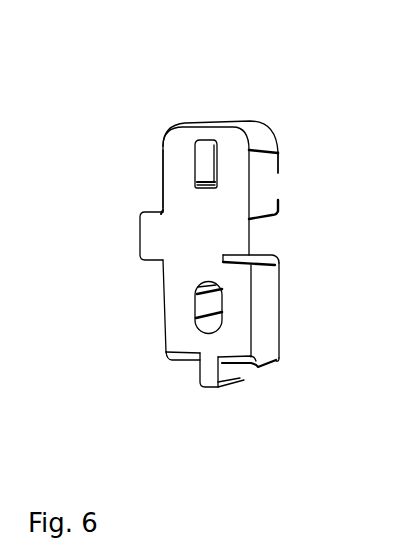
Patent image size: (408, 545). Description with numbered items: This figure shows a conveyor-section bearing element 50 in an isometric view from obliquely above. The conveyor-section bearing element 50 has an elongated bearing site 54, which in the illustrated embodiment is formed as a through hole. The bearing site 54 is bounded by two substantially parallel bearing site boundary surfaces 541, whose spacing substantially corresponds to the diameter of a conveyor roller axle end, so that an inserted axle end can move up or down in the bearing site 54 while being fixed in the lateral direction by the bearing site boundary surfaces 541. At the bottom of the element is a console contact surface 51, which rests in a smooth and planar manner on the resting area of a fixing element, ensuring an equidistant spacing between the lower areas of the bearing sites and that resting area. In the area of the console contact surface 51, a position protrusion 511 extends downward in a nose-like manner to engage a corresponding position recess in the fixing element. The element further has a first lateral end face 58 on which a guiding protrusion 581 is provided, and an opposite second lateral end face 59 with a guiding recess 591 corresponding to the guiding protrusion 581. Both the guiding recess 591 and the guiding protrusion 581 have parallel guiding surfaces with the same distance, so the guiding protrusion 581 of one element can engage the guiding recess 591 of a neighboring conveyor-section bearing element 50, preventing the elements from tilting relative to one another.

The conveyor-section bearing element 50 is at (197, 97).
The console contact surface 51 is at (278, 362).
The position protrusion 511 is at (219, 372).
The bearing site 54 is at (184, 148).
The bearing site boundary surfaces 541 is at (203, 162).
The first lateral end face 58 is at (163, 167).
The guiding protrusion 581 is at (152, 234).
The second lateral end face 59 is at (262, 193).
The guiding recess 591 is at (278, 240).